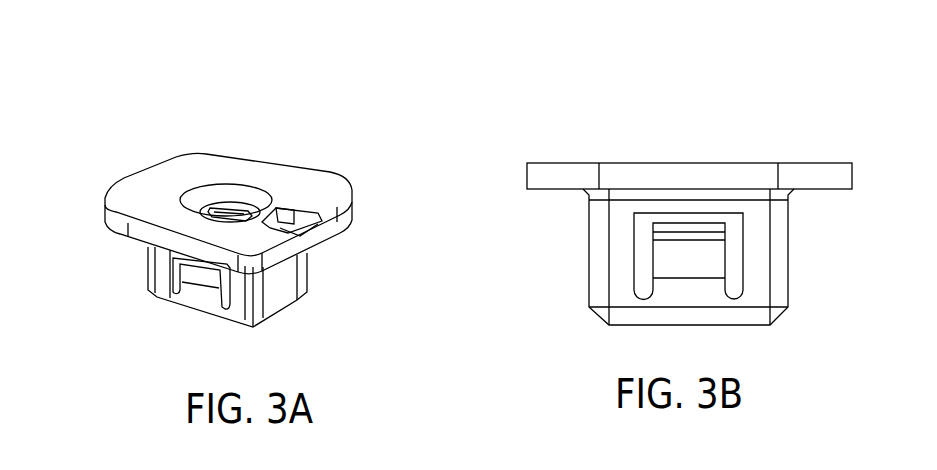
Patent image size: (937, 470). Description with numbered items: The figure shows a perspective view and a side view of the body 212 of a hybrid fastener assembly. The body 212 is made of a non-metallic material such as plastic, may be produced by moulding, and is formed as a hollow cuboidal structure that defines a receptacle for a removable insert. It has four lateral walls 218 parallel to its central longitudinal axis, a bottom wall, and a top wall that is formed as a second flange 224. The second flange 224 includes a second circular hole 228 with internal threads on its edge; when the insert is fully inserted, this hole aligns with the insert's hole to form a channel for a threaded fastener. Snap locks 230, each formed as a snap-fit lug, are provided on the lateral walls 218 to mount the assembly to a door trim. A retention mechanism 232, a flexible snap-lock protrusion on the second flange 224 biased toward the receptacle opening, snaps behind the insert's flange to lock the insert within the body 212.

In FIG. 3A, the body 212 is at (258, 175).
In FIG. 3B, the body 212 is at (659, 175).
In FIG. 3A, the lateral walls 218 is at (277, 291).
In FIG. 3B, the lateral walls 218 is at (620, 295).
In FIG. 3A, the second flange 224 is at (330, 195).
In FIG. 3B, the second flange 224 is at (553, 177).
In FIG. 3A, the second circular hole 228 is at (222, 205).
In FIG. 3A, the snap locks 230 is at (212, 289).
In FIG. 3B, the snap locks 230 is at (702, 257).
In FIG. 3A, the retention mechanism 232 is at (296, 219).